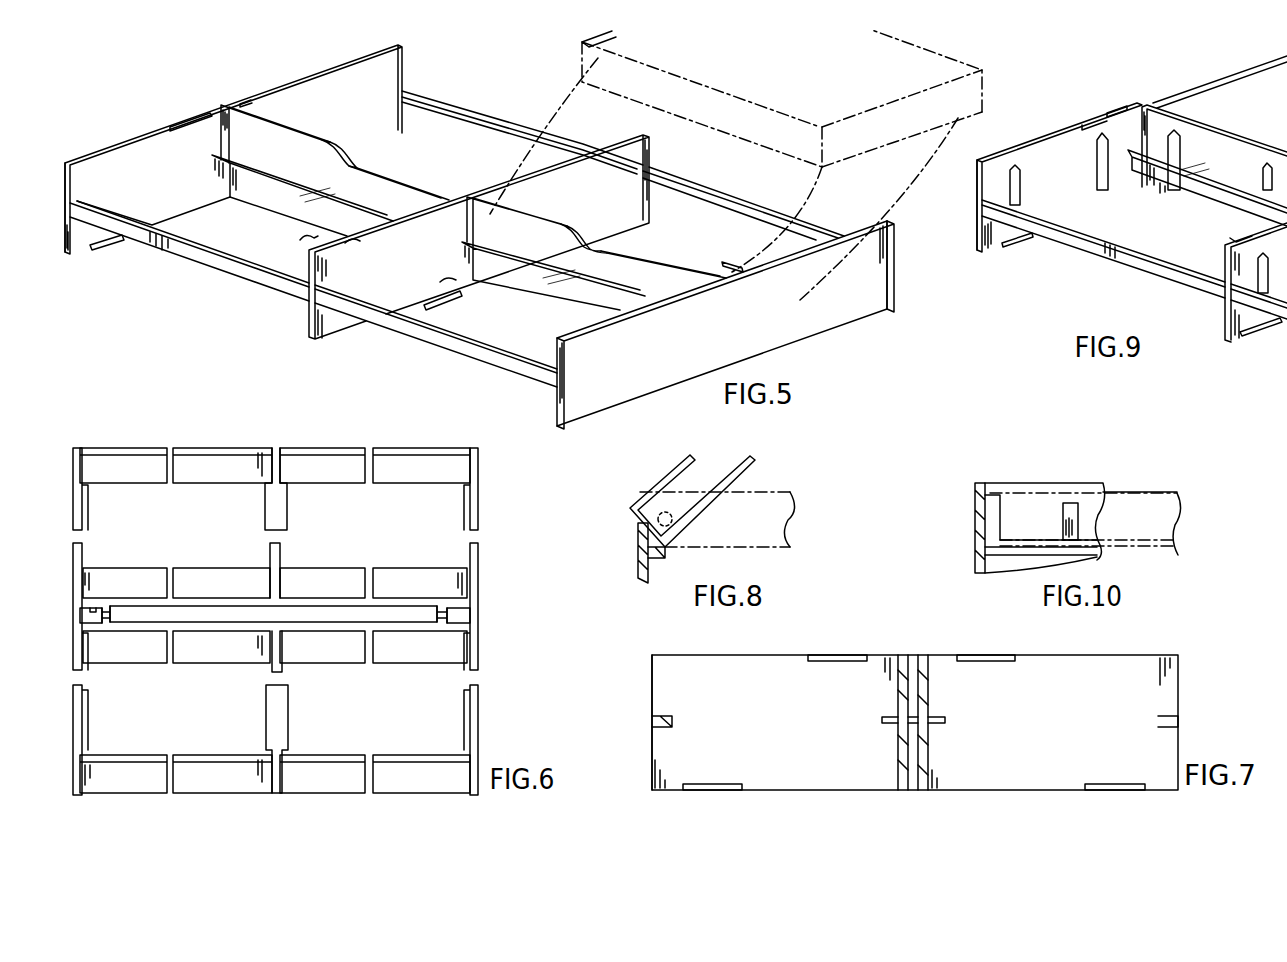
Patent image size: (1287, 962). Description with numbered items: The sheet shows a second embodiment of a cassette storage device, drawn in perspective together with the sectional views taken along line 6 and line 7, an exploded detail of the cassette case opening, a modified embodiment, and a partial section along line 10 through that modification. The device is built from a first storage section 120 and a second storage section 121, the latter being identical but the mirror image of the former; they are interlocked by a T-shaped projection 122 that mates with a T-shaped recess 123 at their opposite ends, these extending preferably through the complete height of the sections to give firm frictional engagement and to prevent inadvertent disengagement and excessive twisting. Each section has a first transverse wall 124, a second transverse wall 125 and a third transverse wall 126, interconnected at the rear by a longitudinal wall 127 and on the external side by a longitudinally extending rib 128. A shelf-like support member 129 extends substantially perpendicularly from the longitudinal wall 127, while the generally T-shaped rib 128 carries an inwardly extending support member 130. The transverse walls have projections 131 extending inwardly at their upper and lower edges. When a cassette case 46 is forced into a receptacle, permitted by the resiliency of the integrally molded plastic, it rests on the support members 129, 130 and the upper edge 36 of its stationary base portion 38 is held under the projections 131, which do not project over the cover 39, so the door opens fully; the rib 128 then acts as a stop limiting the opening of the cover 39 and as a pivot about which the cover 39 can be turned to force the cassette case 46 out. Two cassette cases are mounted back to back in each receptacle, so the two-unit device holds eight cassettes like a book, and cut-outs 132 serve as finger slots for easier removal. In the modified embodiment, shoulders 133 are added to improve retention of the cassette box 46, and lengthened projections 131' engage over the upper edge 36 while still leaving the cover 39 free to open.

In FIG. 5, the section line 6— 6 is at (197, 72).
In FIG. 5, the section line 7— 7 is at (543, 112).
In FIG. 9, the section line 10— 10 is at (1043, 118).
In FIG. 5, the upper edge 36 is at (880, 108).
In FIG. 5, the base portion 38 is at (866, 153).
In FIG. 10, the base portion 38 is at (1137, 547).
In FIG. 5, the cover 39 is at (580, 48).
In FIG. 8, the cover 39 is at (668, 466).
In FIG. 10, the cover 39 is at (1130, 492).
In FIG. 5, the cassette case 46 is at (950, 50).
In FIG. 8, the cassette case 46 is at (775, 488).
In FIG. 10, the cassette case 46 is at (1172, 490).
In FIG. 5, the first storage section 120 is at (660, 375).
In FIG. 9, the first storage section 120 is at (973, 188).
In FIG. 5, the second storage section 121 is at (838, 312).
In FIG. 5, the T-shaped projection 122 is at (730, 265).
In FIG. 6, the T-shaped projection 122 is at (458, 606).
In FIG. 6, the T-shaped recess 123 is at (106, 606).
In FIG. 5, the first transverse wall 124 is at (104, 160).
In FIG. 9, the first transverse wall 124 is at (977, 242).
In FIG. 5, the second transverse wall 125 is at (462, 280).
In FIG. 9, the second transverse wall 125 is at (1245, 334).
In FIG. 5, the third transverse wall 126 is at (590, 400).
In FIG. 5, the longitudinal wall 127 is at (225, 106).
In FIG. 7, the longitudinal wall 127 is at (898, 660).
In FIG. 5, the longitudinally extending rib 128 is at (248, 279).
In FIG. 9, the longitudinally extending rib 128 is at (1100, 257).
In FIG. 7, the longitudinally extending rib 128 is at (654, 716).
In FIG. 8, the longitudinally extending rib 128 is at (637, 545).
In FIG. 5, the shelf-like support member 129 is at (278, 172).
In FIG. 7, the shelf-like support member 129 is at (884, 720).
In FIG. 7, the support member 130 is at (676, 718).
In FIG. 8, the support member 130 is at (668, 556).
In FIG. 5, the projections 131 is at (356, 199).
In FIG. 7, the projections 131 is at (914, 722).
In FIG. 9, the lengthened projections 131' is at (1167, 152).
In FIG. 10, the lengthened projections 131' is at (1040, 501).
In FIG. 5, the cut-outs 132 is at (345, 145).
In FIG. 9, the shoulders 133 is at (1095, 158).
In FIG. 10, the shoulders 133 is at (975, 548).